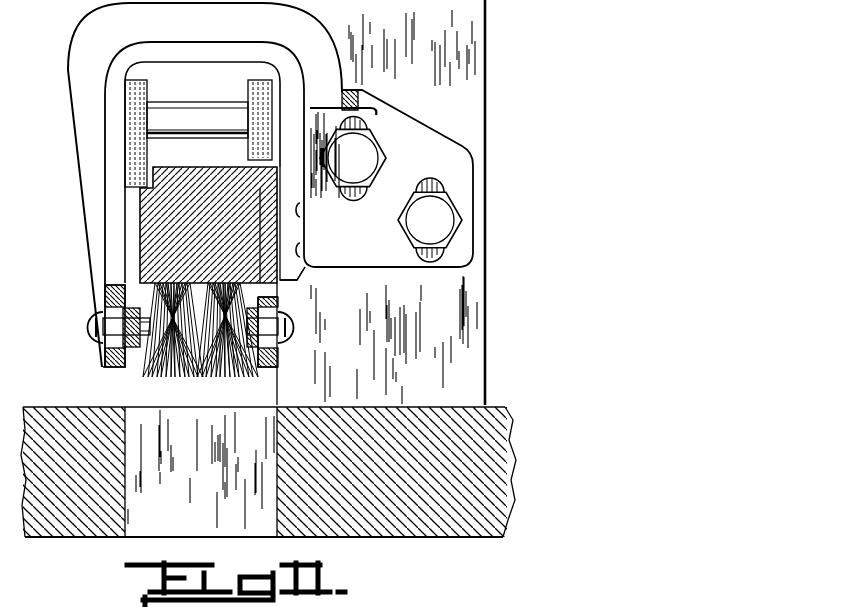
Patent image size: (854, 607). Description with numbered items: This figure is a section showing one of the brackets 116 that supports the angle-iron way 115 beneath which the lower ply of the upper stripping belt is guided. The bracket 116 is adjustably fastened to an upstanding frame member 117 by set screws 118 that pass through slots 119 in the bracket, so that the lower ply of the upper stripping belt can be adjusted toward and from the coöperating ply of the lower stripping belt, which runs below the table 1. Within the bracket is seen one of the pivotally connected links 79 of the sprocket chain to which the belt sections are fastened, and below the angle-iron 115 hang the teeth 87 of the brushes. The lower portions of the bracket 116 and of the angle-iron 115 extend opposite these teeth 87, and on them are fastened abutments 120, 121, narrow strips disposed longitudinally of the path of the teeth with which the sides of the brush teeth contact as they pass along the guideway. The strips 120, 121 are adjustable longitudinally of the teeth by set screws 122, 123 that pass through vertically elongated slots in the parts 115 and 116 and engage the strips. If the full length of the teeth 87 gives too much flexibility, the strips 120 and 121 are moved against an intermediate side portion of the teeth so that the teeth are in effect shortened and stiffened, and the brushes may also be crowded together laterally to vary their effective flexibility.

The table 1 is at (47, 409).
The links 79 is at (142, 94).
The teeth 87 is at (239, 373).
The angle-iron way 115 is at (200, 165).
The brackets 116 is at (81, 198).
The upstanding frame member 117 is at (463, 82).
The set screws 118 is at (391, 188).
The slots 119 is at (428, 178).
The abutment 120 is at (279, 296).
The abutment 121 is at (143, 340).
The set screw 122 is at (293, 334).
The set screw 123 is at (96, 325).